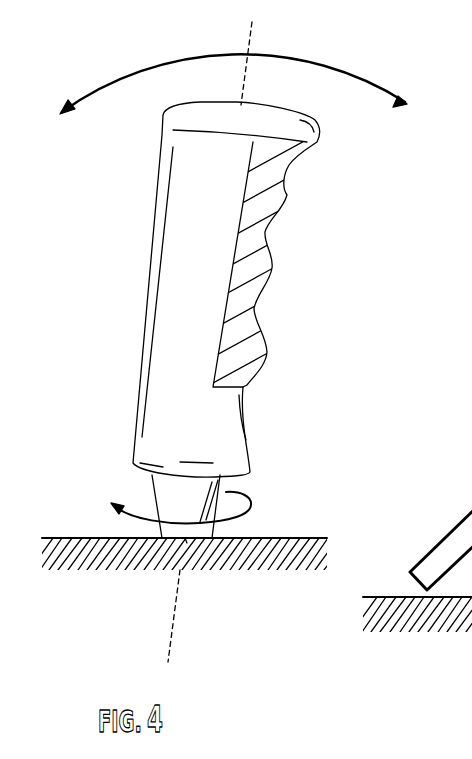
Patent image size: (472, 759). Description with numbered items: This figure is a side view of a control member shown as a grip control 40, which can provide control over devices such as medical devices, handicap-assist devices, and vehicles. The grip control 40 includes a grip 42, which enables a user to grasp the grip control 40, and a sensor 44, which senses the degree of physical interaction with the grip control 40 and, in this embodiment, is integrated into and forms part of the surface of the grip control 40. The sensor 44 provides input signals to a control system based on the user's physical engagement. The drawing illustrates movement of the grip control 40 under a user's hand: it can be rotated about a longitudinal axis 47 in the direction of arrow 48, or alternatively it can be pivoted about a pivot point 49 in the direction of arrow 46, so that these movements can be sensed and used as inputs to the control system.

The grip control 40 is at (343, 246).
The grip 42 is at (181, 182).
The sensor 44 is at (272, 207).
The arrow 46 is at (355, 72).
The longitudinal axis 47 is at (183, 641).
The arrow 48 is at (243, 518).
The pivot point 49 is at (186, 540).